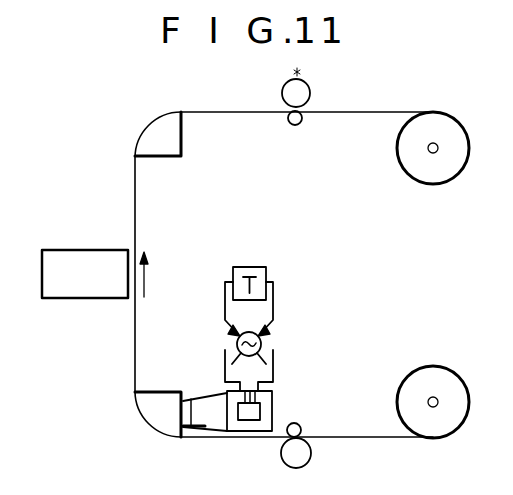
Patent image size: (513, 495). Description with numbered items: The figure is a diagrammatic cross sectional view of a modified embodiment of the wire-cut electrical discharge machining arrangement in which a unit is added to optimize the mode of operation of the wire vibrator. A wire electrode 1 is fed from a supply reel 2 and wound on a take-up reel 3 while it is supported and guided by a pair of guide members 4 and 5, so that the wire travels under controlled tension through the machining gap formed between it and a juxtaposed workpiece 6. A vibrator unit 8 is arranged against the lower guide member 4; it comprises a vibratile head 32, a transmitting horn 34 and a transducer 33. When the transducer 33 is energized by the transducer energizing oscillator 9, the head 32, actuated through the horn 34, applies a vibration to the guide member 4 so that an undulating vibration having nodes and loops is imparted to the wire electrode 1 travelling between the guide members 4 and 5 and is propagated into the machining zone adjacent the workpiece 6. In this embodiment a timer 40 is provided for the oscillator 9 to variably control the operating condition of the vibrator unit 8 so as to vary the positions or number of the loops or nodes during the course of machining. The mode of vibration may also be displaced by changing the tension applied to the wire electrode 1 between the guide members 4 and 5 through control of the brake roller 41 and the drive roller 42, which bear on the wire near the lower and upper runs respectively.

The wire electrode 1 is at (135, 337).
The supply reel 2 is at (397, 397).
The take-up reel 3 is at (397, 150).
The support and guide member 4 is at (148, 412).
The support and guide member 5 is at (142, 135).
The workpiece 6 is at (88, 250).
The vibrator unit 8 is at (272, 412).
The oscillator 9 is at (272, 342).
The vibratile head 32 is at (184, 404).
The transducer 33 is at (259, 432).
The transmitting horn 34 is at (210, 430).
The timer 40 is at (258, 267).
The brake roller 41 is at (305, 447).
The drive roller 42 is at (307, 92).